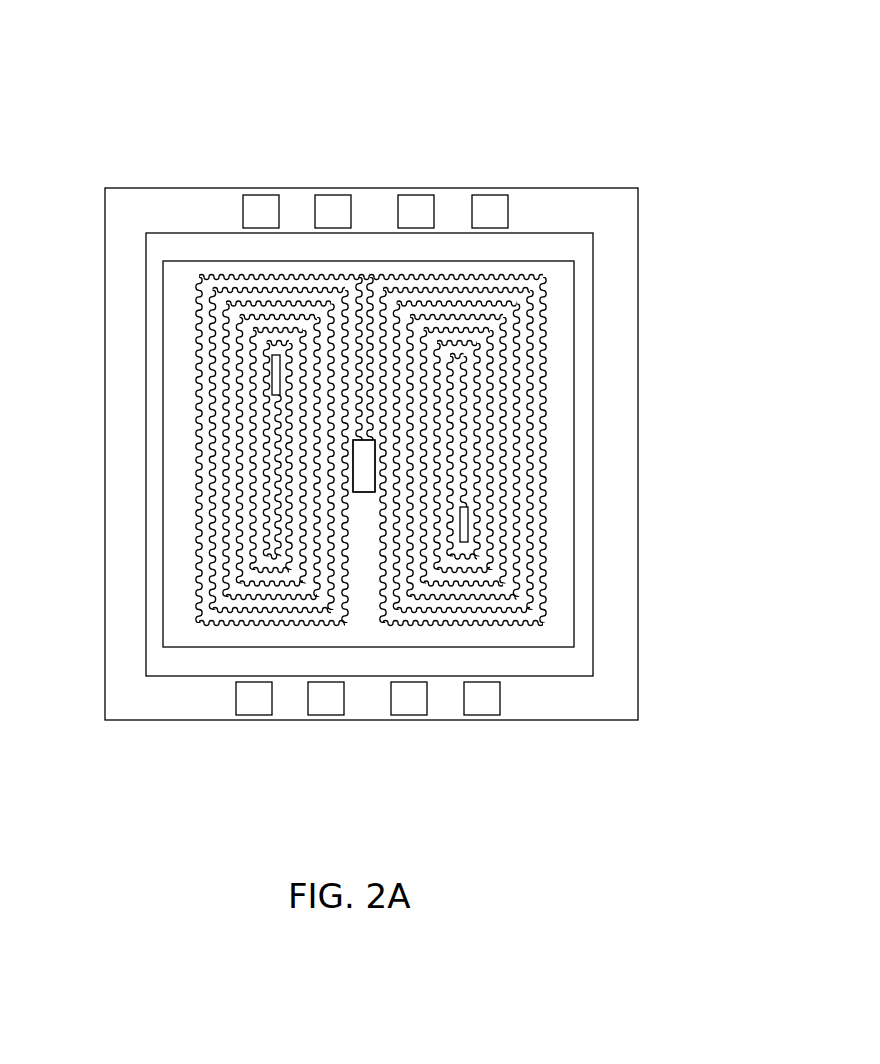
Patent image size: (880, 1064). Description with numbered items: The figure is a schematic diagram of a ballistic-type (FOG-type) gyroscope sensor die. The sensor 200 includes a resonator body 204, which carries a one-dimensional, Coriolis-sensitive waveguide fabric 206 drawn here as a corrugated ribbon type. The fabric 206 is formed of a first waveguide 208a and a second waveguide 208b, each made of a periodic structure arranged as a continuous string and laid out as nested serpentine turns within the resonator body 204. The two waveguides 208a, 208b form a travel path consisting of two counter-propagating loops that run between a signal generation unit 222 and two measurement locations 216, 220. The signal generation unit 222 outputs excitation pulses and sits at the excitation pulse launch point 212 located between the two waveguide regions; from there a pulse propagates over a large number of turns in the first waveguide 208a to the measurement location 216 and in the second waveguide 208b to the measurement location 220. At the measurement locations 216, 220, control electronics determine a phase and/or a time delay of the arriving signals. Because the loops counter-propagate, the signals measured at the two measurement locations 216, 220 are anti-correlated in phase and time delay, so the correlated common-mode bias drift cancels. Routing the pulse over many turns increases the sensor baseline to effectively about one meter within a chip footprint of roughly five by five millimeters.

The sensor 200 is at (552, 90).
The resonator body 204 is at (190, 187).
The Coriolis-sensitive waveguide fabric 206 is at (415, 290).
The first waveguide 208a is at (411, 530).
The second waveguide 208b is at (595, 530).
The excitation pulse launch point 212 is at (547, 422).
The measurement location 216 is at (156, 353).
The measurement location 220 is at (588, 553).
The signal generation unit 222 is at (368, 611).